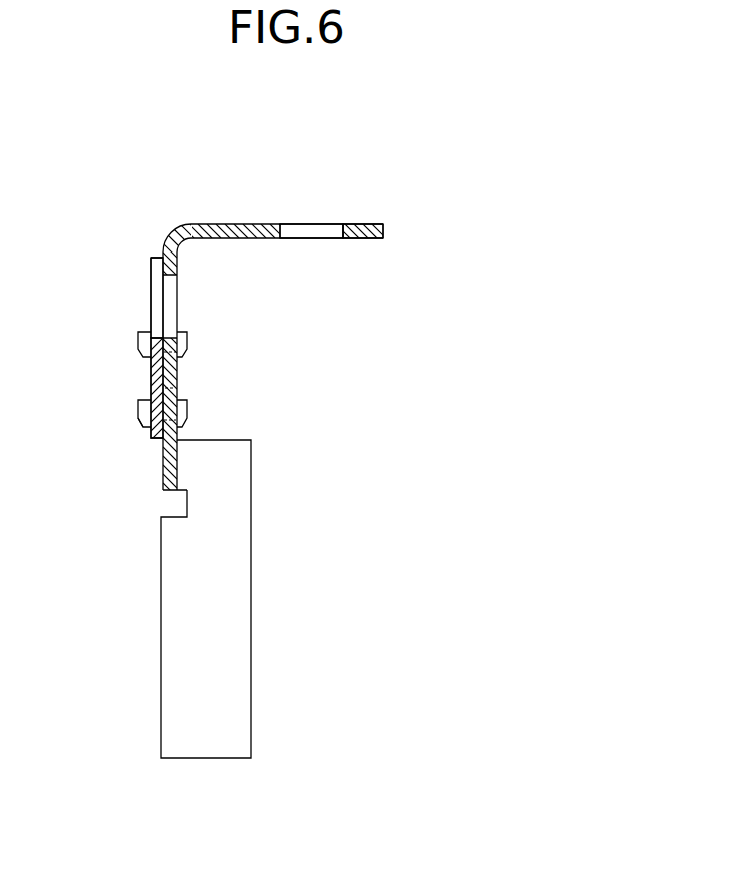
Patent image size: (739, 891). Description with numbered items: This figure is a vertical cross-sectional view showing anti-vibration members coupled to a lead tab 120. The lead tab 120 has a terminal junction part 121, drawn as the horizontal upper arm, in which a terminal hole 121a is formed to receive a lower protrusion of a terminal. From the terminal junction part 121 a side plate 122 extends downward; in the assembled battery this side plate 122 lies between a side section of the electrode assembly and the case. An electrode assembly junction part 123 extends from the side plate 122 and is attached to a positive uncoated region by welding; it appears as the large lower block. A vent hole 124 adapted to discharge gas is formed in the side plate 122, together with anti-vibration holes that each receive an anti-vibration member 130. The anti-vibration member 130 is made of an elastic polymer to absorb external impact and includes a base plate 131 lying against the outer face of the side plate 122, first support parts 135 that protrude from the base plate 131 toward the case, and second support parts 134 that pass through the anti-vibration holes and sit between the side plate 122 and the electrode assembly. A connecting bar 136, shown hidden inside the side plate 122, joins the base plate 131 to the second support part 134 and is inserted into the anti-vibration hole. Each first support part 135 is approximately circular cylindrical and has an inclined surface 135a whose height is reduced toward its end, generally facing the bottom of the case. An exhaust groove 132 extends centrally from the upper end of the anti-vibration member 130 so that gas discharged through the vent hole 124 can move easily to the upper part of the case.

The lead tab 120 is at (152, 203).
The terminal junction part 121 is at (368, 228).
The terminal hole 121a is at (310, 230).
The side plate 122 is at (172, 373).
The electrode assembly junction part 123 is at (251, 598).
The vent hole 124 is at (172, 305).
The anti-vibration member 130 is at (150, 276).
The base plate 131 is at (151, 372).
The exhaust groove 132 is at (151, 293).
The second support part 134 is at (187, 342).
The first support part 135 is at (138, 335).
The inclined surface 135a is at (138, 421).
The connecting bar 136 is at (177, 392).